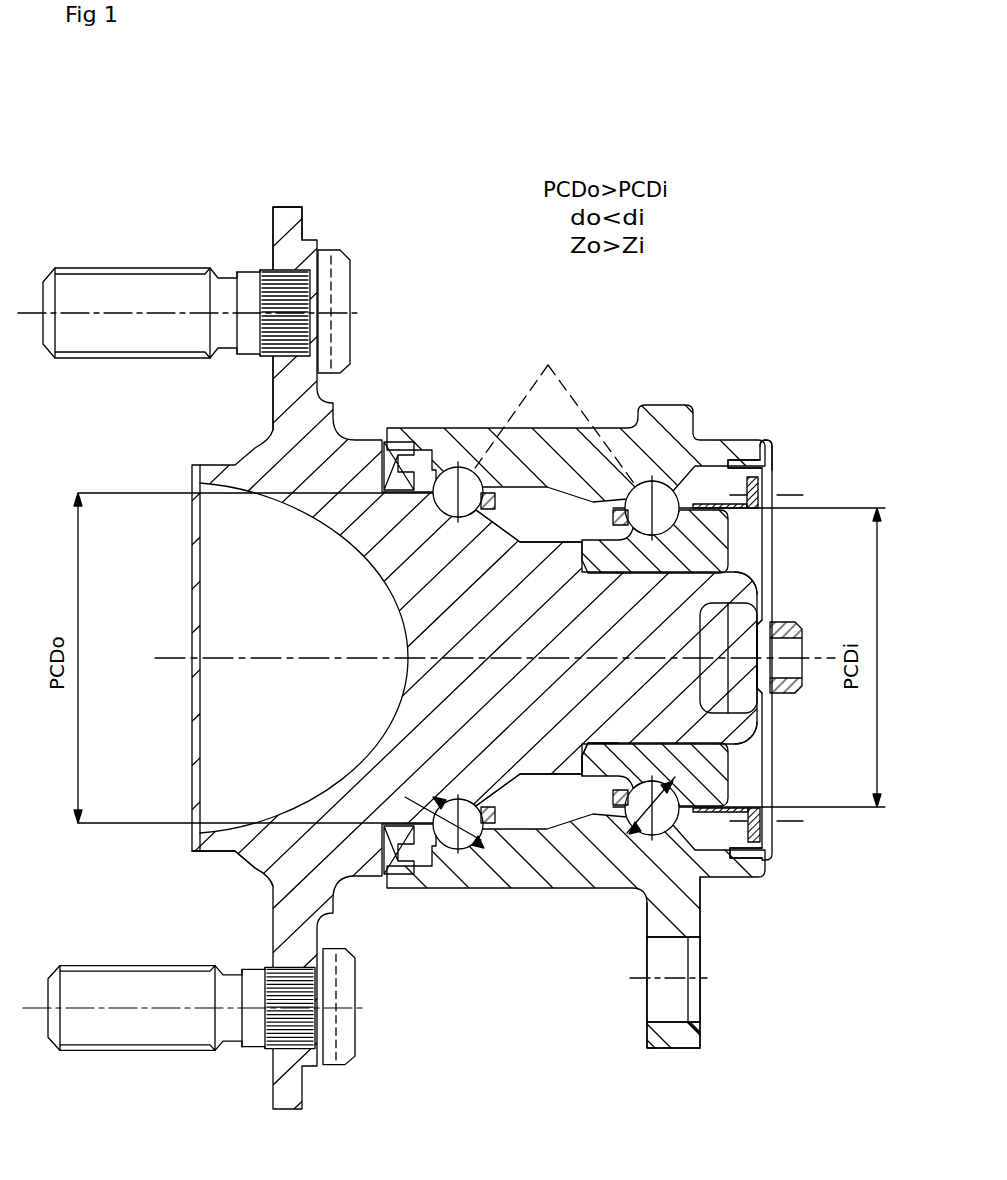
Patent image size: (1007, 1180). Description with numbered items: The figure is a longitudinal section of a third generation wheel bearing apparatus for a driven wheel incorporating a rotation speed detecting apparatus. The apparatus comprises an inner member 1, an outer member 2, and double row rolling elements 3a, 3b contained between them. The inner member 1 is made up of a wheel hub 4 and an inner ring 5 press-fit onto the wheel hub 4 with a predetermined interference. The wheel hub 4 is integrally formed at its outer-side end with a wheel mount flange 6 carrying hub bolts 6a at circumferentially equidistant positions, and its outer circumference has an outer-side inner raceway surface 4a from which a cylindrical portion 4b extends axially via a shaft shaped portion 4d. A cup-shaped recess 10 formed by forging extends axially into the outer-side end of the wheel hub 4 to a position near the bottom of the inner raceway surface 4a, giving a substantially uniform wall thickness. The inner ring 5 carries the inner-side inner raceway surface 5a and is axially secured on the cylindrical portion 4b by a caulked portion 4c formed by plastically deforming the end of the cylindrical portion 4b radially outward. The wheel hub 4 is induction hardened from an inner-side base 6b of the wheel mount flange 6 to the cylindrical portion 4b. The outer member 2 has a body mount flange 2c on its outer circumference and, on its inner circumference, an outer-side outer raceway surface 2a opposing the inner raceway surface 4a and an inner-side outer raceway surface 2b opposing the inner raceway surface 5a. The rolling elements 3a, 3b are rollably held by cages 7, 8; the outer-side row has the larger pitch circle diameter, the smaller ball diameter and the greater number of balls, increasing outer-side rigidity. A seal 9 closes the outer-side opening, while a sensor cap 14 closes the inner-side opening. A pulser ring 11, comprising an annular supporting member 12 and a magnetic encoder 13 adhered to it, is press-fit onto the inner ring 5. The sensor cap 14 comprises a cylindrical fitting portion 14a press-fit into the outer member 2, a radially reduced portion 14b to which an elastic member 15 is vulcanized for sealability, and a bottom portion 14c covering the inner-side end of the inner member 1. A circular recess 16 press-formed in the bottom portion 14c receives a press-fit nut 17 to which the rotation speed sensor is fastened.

The inner member 1 is at (297, 627).
The outer member 2 is at (610, 443).
The outer-side outer raceway surface 2a is at (461, 476).
The inner-side outer raceway surface 2b is at (663, 493).
The body mount flange 2c is at (680, 1042).
The outer-side row of rolling elements 3a is at (484, 892).
The inner-side row of rolling elements 3b is at (613, 892).
The wheel hub 4 is at (343, 528).
The inner raceway surface 4a is at (456, 512).
The cylindrical portion 4b is at (702, 590).
The caulked portion 4c is at (758, 755).
The shaft shaped portion 4d is at (528, 524).
The inner ring 5 is at (717, 542).
The inner raceway surface 5a is at (652, 540).
The wheel mount flange 6 is at (288, 210).
The hub bolts 6a is at (120, 283).
The inner-side base 6b is at (300, 437).
The cage 7 is at (515, 770).
The cage 8 is at (586, 752).
The seal 9 is at (277, 890).
The cup-shaped recess 10 is at (373, 747).
The pulser ring 11 is at (788, 647).
The annular supporting member 12 is at (753, 803).
The magnetic encoder 13 is at (768, 847).
The sensor cap 14 is at (774, 592).
The cylindrical fitting portion 14a is at (744, 462).
The radially reduced portion 14b is at (768, 445).
The bottom portion 14c is at (773, 717).
The elastic member 15 is at (768, 459).
The circular recess 16 is at (758, 668).
The nut 17 is at (803, 690).